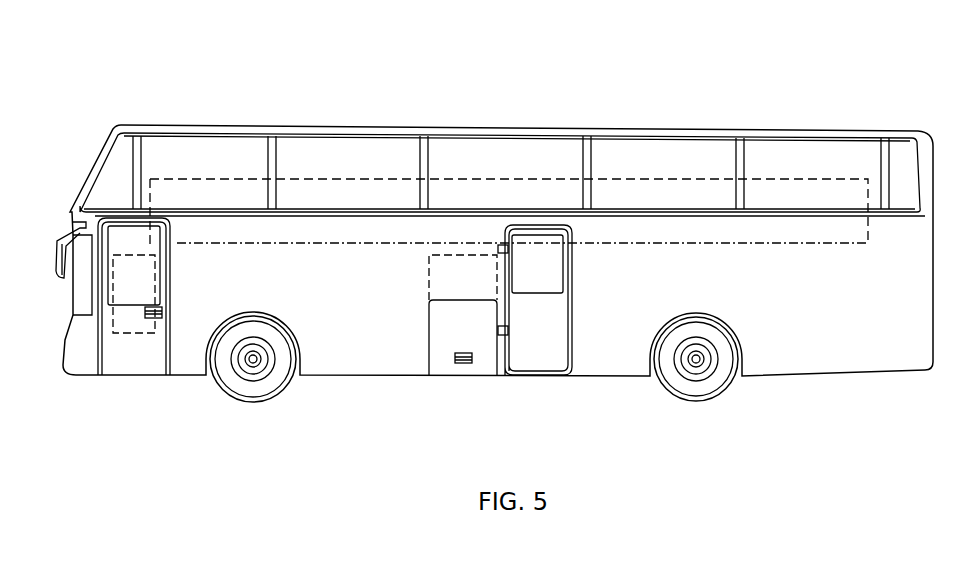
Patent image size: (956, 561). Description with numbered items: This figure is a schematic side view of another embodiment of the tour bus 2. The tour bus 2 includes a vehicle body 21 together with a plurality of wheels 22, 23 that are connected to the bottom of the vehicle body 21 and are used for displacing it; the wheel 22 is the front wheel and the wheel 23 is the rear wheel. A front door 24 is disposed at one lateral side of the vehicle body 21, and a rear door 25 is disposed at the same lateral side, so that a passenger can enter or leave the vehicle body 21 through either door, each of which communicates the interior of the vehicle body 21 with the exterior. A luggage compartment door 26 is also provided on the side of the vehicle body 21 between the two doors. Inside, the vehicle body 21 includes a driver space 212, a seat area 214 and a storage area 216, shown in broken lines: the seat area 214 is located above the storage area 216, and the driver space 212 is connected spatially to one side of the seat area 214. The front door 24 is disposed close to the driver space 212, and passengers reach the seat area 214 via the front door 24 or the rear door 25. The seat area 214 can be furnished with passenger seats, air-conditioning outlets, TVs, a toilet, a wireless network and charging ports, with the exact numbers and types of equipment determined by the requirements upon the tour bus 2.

The tour bus 2 is at (110, 35).
The vehicle body 21 is at (199, 126).
The seat area 214 is at (795, 200).
The driver space 212 is at (137, 286).
The front door 24 is at (133, 360).
The front wheel 22 is at (231, 383).
The rear wheel 23 is at (679, 381).
The luggage compartment door 26 is at (446, 372).
The storage area 216 is at (438, 277).
The rear door 25 is at (541, 372).